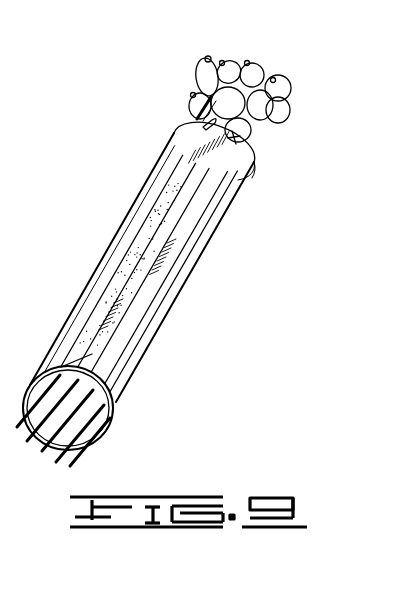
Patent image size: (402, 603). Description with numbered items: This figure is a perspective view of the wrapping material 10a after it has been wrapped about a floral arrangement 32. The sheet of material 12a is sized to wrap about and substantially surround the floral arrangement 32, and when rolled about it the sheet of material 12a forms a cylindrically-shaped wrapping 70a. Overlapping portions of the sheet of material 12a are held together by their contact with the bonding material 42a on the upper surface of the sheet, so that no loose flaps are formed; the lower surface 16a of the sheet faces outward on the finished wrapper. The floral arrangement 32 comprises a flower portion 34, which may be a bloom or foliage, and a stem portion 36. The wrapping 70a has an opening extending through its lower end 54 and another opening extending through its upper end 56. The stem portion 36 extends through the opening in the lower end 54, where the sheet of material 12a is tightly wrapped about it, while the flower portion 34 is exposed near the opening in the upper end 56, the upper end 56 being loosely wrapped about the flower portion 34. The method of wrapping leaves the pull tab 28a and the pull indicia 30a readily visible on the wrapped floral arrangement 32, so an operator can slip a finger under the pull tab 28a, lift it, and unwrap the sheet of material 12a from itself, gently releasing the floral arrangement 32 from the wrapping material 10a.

The wrapping material 10a is at (150, 76).
The sheet of material 12a is at (118, 226).
The lower surface 16a is at (96, 283).
The pull tab 28a is at (233, 137).
The pull indicia 30a is at (197, 119).
The floral arrangement 32 is at (199, 57).
The flower portion 34 is at (267, 73).
The stem portion 36 is at (72, 465).
The bonding material 42a is at (188, 222).
The lower end 54 is at (97, 440).
The upper end 56 is at (256, 160).
The cylindrically-shaped wrapping 70a is at (159, 322).